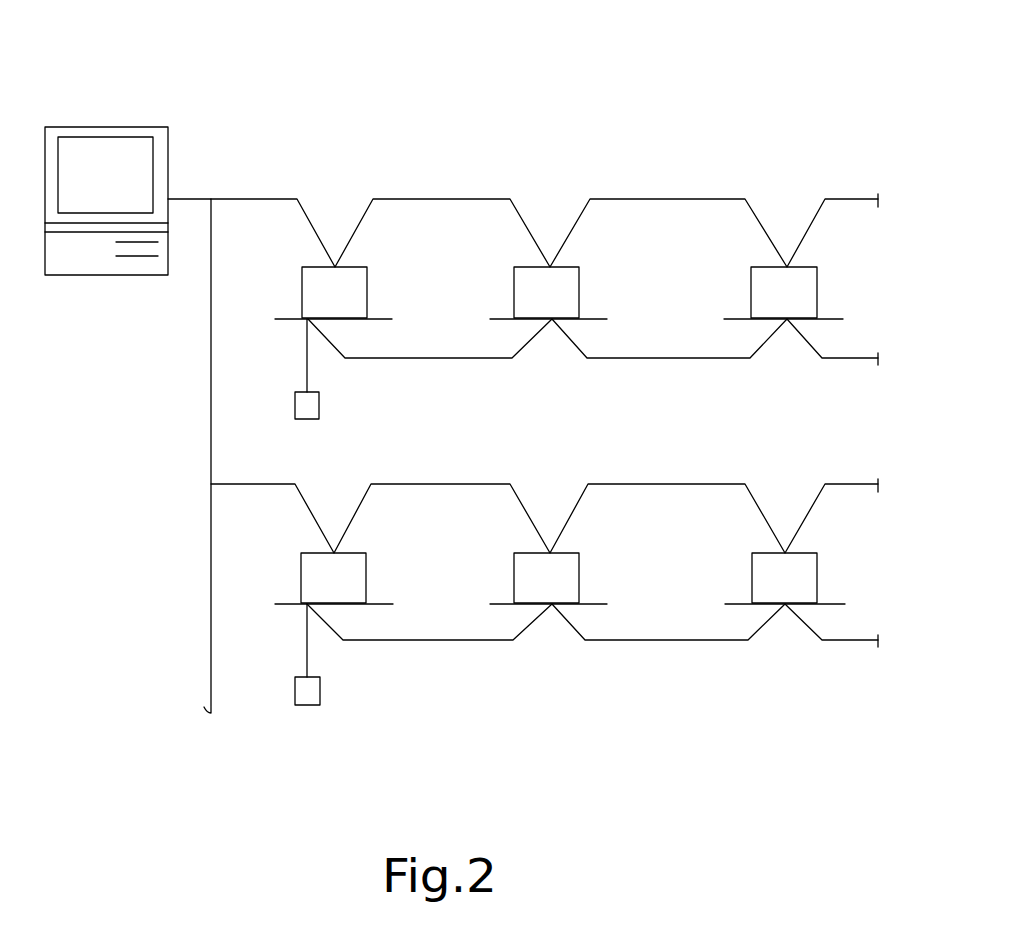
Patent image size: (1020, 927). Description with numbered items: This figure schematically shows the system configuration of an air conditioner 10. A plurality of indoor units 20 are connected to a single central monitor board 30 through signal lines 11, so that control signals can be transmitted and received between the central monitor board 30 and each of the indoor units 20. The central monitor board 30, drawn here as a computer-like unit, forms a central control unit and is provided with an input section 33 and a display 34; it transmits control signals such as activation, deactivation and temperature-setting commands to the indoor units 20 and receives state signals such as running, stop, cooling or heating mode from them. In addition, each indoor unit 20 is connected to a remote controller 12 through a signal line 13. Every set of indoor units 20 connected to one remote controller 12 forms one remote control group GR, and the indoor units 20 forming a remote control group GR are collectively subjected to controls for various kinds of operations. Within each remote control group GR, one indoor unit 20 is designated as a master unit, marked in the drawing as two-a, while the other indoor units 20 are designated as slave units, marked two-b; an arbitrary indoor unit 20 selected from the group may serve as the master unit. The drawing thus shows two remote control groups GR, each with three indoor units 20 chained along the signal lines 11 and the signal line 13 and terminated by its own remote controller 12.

The air conditioner 10 is at (273, 92).
The signal lines 11 is at (262, 199).
The remote controller 12 is at (319, 408).
The signal line 13 is at (440, 358).
The indoor unit 20 is at (367, 271).
The central monitor board 30 is at (115, 127).
The input section 33 is at (97, 263).
The display 34 is at (72, 137).
The remote control group GR is at (567, 158).